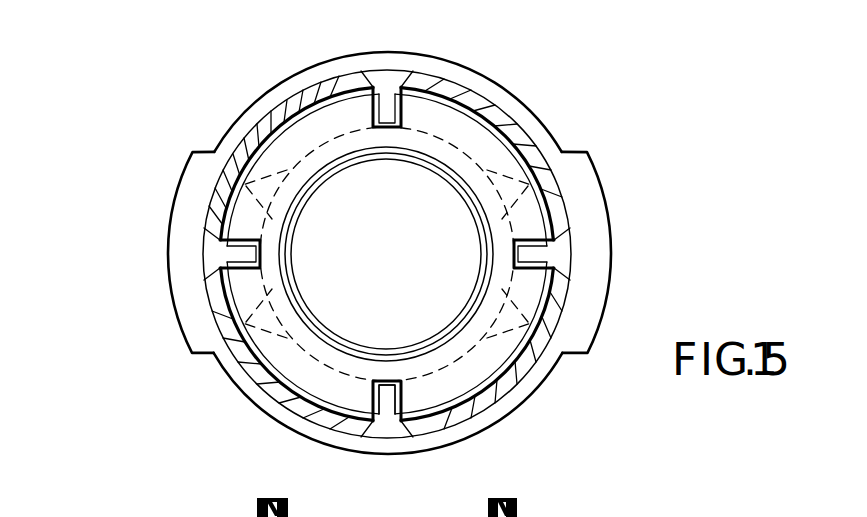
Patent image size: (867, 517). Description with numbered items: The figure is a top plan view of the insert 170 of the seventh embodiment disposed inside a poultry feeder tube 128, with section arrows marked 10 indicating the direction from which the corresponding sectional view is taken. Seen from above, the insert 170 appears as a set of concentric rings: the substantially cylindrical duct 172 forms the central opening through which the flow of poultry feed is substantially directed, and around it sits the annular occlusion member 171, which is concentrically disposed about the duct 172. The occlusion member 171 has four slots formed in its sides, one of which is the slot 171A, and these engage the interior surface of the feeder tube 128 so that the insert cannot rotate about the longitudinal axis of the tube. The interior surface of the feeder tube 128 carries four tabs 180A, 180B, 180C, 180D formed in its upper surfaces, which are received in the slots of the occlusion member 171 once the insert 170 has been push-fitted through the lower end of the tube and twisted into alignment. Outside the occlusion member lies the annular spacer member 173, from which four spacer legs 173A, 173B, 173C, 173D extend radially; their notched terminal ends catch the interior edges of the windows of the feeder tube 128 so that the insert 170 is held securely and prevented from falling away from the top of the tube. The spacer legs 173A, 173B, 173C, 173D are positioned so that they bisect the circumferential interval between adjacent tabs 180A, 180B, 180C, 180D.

The section line 10- 10 is at (65, 197).
The poultry feeder tube 128 is at (540, 112).
The insert 170 is at (311, 348).
The occlusion member 171 is at (198, 349).
The slot 171A is at (404, 398).
The duct 172 is at (320, 323).
The spacer member 173 is at (481, 394).
The spacer leg 173A is at (566, 362).
The spacer leg 173B is at (228, 366).
The spacer leg 173C is at (235, 140).
The spacer leg 173D is at (568, 142).
The tab 180A is at (438, 405).
The tab 180B is at (212, 250).
The tab 180C is at (383, 118).
The tab 180D is at (562, 253).